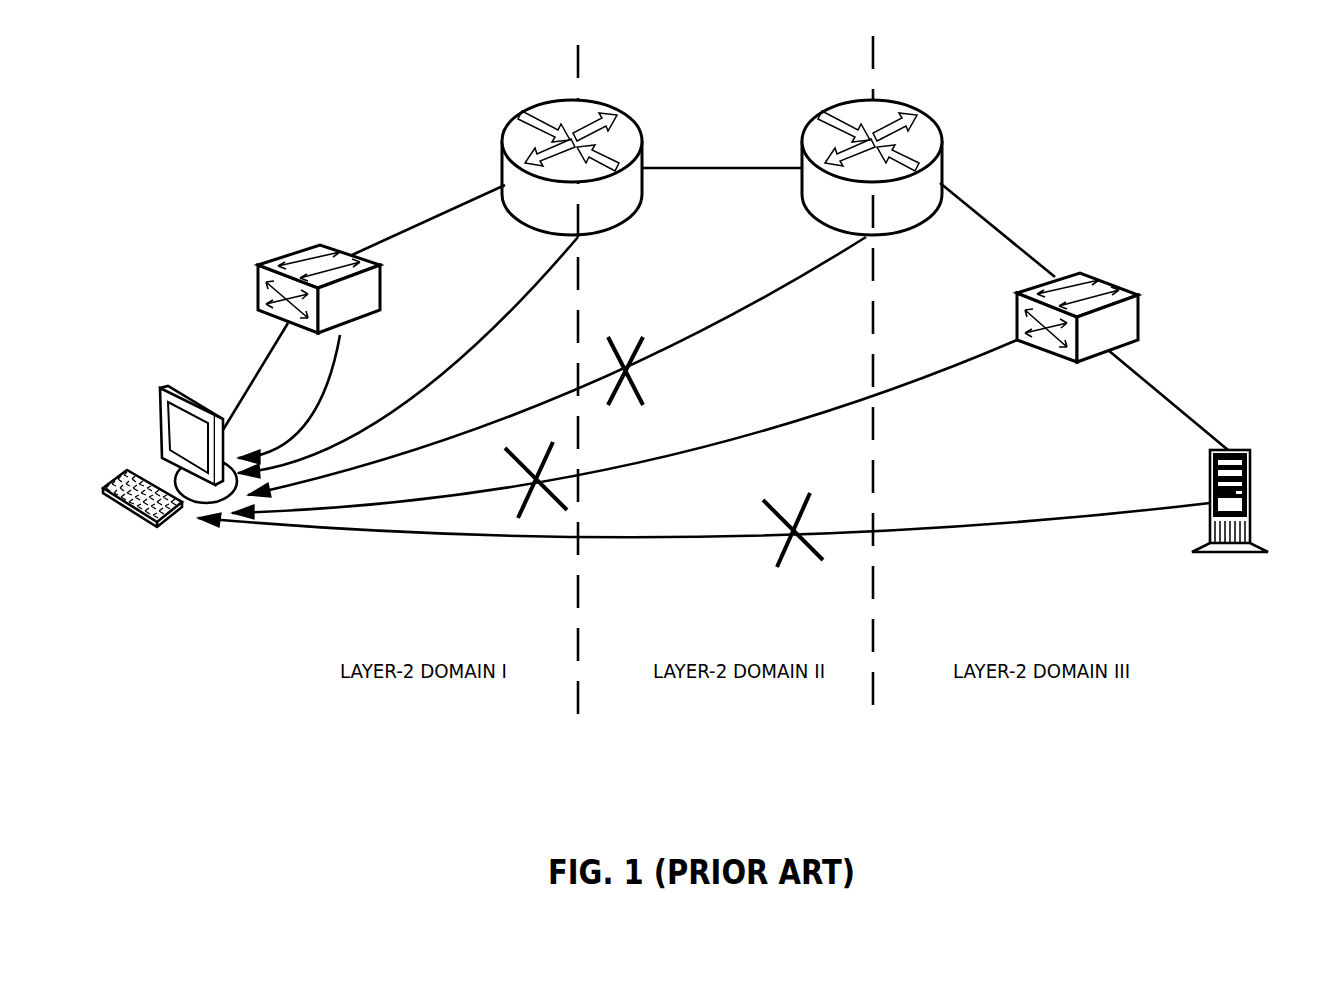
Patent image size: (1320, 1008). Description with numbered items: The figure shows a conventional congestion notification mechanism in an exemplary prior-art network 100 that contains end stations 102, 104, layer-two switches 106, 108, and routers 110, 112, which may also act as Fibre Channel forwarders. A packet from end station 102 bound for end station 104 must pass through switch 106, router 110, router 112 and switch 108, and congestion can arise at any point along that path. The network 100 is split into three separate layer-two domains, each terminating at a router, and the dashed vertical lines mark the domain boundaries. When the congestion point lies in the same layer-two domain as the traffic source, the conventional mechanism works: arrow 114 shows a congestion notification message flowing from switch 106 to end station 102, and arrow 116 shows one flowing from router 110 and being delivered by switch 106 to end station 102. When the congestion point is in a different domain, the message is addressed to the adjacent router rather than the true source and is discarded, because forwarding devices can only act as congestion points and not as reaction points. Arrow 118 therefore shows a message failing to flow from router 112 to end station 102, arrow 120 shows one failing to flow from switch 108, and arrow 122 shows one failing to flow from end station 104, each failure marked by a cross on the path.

The network 100 is at (744, 782).
The end station 102 is at (168, 422).
The end station 104 is at (1250, 500).
The layer-2 switch 106 is at (283, 257).
The layer-2 switch 108 is at (1110, 282).
The router 110 is at (602, 103).
The router 112 is at (895, 103).
The arrow 114 is at (289, 399).
The arrow 116 is at (408, 357).
The arrow 118 is at (557, 367).
The arrow 120 is at (624, 429).
The arrow 122 is at (704, 530).